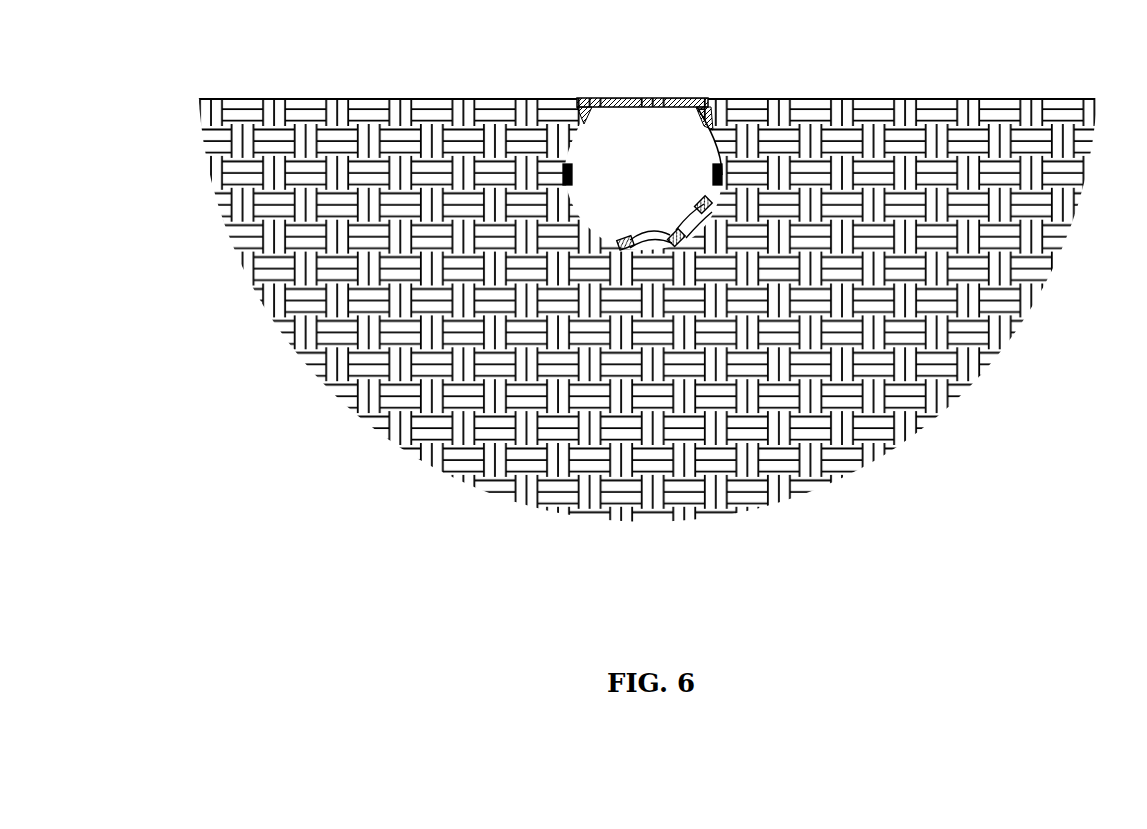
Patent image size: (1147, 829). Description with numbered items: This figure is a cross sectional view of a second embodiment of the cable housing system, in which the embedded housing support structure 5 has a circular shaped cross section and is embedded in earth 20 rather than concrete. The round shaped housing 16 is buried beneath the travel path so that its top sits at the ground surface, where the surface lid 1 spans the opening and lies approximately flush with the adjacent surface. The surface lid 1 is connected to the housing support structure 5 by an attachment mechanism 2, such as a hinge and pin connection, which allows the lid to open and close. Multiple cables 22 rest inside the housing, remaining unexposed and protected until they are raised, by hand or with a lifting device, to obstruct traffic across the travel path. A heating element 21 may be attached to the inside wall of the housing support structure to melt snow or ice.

The surface lid 1 is at (632, 98).
The attachment mechanism 2 is at (703, 105).
The housing support structure 5 is at (605, 148).
The round shaped embedded housing support structure 16 is at (712, 130).
The earth 20 is at (977, 278).
The heating element 21 is at (563, 172).
The multiple cables 22 is at (683, 226).